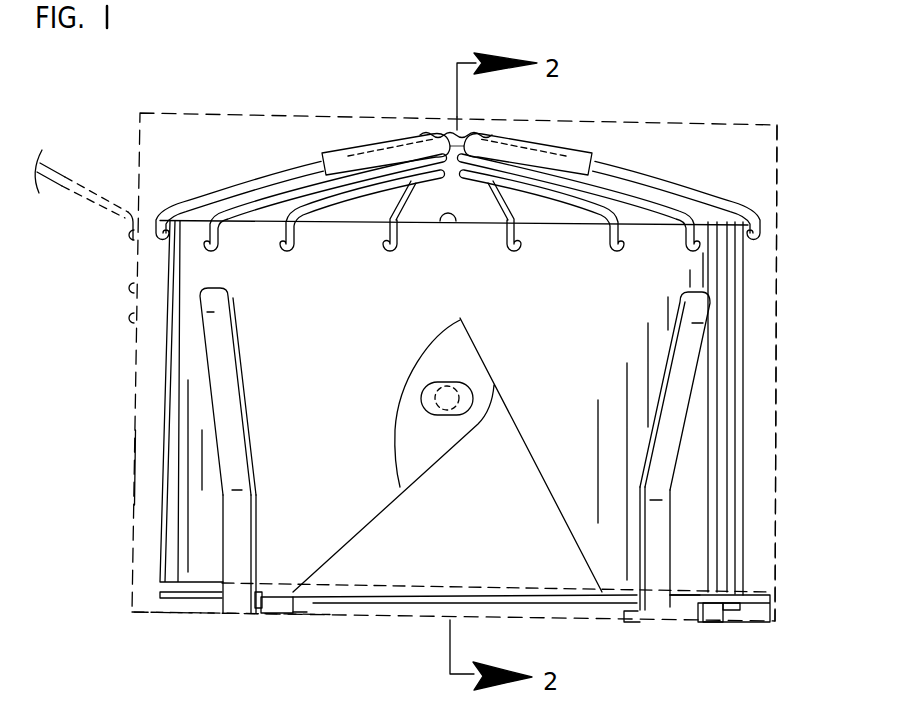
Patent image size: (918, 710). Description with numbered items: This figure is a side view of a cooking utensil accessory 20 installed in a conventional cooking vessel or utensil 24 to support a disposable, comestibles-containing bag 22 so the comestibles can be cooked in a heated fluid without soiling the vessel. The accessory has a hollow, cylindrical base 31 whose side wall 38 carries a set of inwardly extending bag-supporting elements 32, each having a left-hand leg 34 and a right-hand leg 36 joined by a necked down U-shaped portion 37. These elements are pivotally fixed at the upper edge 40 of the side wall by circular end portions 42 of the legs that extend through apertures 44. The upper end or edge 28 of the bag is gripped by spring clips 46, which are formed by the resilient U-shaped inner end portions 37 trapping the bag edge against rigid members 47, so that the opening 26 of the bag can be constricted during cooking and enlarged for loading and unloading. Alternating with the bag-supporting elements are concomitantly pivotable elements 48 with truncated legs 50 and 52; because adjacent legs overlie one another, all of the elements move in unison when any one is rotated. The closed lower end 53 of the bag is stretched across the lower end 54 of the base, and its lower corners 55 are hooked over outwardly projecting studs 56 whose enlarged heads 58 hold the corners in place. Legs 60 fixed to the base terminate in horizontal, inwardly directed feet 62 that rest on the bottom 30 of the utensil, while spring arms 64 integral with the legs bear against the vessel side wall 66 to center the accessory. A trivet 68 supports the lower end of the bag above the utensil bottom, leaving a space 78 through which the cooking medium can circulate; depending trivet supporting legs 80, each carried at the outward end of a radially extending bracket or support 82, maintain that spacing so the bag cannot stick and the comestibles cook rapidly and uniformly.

The cooking utensil accessory 20 is at (700, 155).
The disposable comestibles-containing bag 22 is at (381, 496).
The cooking vessel or utensil 24 is at (137, 430).
The opening 26 is at (462, 143).
The upper end or edge of bag 28 is at (447, 133).
The bottom of utensil 30 is at (133, 605).
The base 31 is at (758, 387).
The bag-supporting elements 32 is at (280, 168).
The left-hand leg 34 is at (330, 210).
The right-hand leg 36 is at (235, 190).
The U-shaped portion 37 is at (387, 140).
The side wall of base 38 is at (546, 365).
The upper edge of side wall 40 is at (447, 222).
The circular end portions 42 is at (217, 237).
The apertures 44 is at (383, 258).
The spring clips 46 is at (372, 133).
The rigid members 47 is at (348, 152).
The pivotable elements 48 is at (527, 192).
The truncated leg 50 is at (282, 217).
The truncated leg 52 is at (572, 226).
The lower end of bag 53 is at (417, 597).
The lower end of base 54 is at (185, 587).
The lower corners of bag 55 is at (433, 336).
The studs 56 is at (432, 381).
The enlarged heads 58 is at (427, 413).
The legs 60 is at (272, 524).
The feet 62 is at (630, 623).
The spring arms 64 is at (206, 352).
The vessel side wall 66 is at (773, 480).
The trivet 68 is at (754, 606).
The space 78 is at (348, 613).
The trivet supporting legs 80 is at (283, 613).
The bracket or support 82 is at (707, 596).